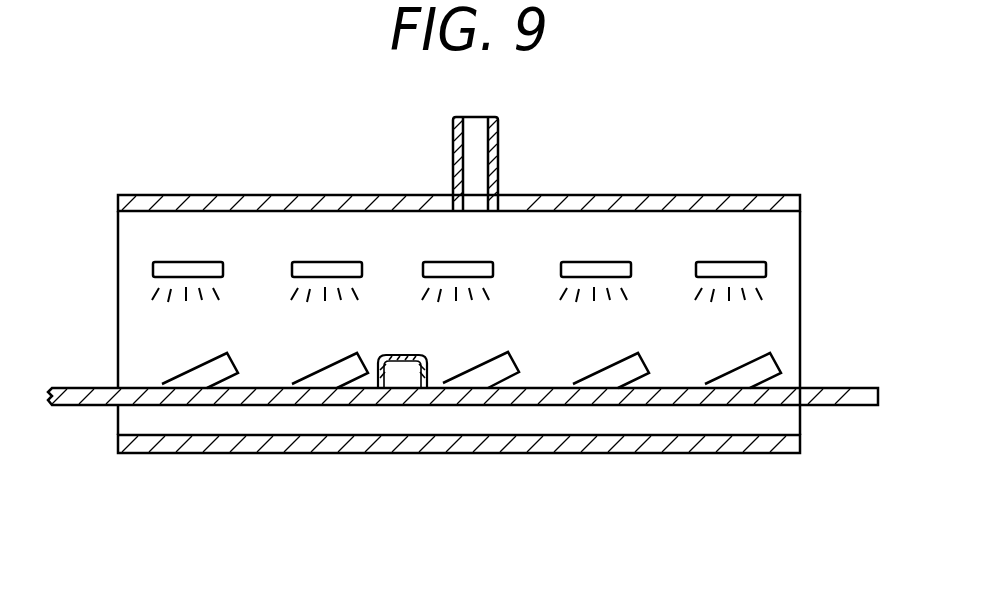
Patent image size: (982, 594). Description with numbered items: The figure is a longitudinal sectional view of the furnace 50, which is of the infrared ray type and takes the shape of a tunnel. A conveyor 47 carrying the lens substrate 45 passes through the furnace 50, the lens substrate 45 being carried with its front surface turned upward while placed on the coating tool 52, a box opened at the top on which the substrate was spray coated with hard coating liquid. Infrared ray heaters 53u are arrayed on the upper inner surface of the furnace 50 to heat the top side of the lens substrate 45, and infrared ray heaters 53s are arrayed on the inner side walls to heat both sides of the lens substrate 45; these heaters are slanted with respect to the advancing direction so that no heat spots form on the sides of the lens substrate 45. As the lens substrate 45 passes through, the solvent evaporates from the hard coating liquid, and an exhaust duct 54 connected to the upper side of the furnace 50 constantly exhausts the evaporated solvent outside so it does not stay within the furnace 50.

The furnace 50 is at (687, 200).
The exhaust duct 54 is at (497, 143).
The conveyor 47 is at (842, 388).
The infrared ray heaters 53u is at (180, 267).
The infrared ray heaters 53s is at (217, 370).
The lens substrate 45 is at (383, 360).
The coating tool 52 is at (398, 388).